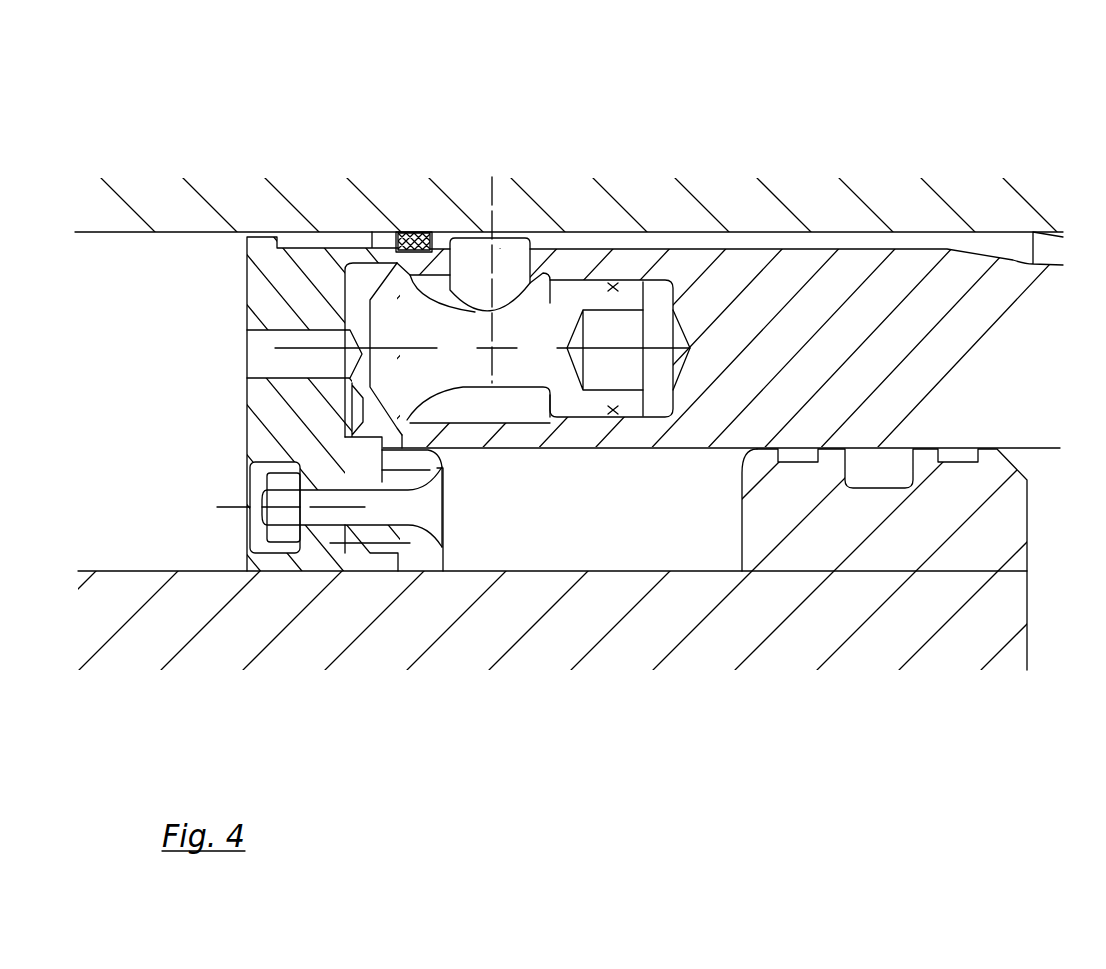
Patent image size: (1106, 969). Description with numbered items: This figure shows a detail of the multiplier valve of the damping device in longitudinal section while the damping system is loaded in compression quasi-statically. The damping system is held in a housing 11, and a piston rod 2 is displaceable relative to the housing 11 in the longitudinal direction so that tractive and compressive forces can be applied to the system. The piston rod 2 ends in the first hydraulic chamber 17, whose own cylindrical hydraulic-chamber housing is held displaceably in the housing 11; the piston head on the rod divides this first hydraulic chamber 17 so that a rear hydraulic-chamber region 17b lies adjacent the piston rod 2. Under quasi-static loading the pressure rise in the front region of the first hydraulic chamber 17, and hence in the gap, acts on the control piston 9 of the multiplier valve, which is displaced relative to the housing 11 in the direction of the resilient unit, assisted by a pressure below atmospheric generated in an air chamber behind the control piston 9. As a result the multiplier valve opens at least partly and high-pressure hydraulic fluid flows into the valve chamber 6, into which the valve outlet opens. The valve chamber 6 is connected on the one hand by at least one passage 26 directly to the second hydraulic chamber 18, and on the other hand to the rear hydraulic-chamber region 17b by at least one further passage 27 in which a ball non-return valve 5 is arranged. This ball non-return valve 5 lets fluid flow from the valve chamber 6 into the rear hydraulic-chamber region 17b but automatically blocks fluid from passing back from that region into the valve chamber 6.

The second hydraulic chamber 18 is at (590, 203).
The passage 26 is at (317, 307).
The valve chamber 6 is at (373, 297).
The control piston 9 is at (482, 235).
The housing 11 is at (576, 232).
The ball non-return valve 5 is at (335, 641).
The further passage 27 is at (415, 647).
The first hydraulic chamber 17 is at (597, 633).
The rear hydraulic-chamber region 17b is at (597, 510).
The piston rod 2 is at (553, 633).